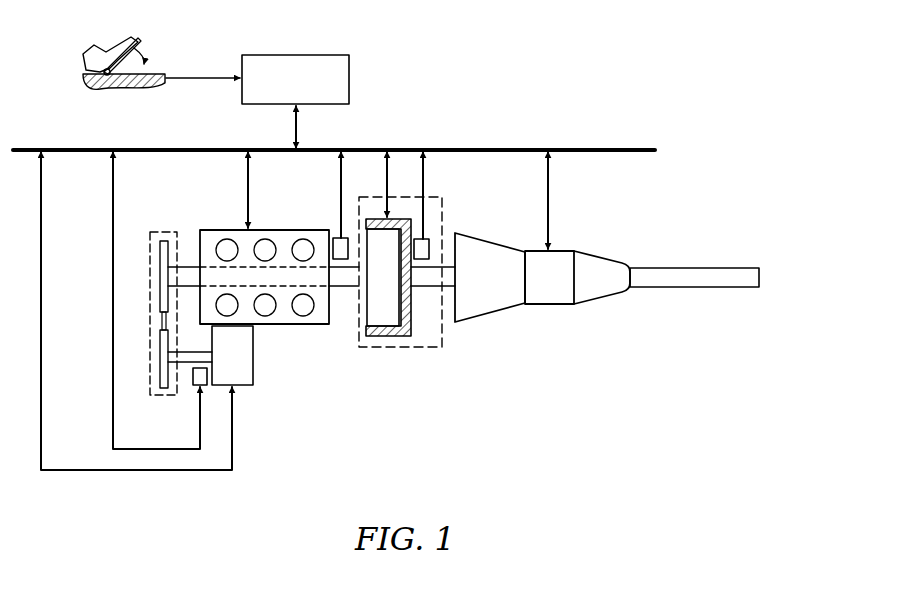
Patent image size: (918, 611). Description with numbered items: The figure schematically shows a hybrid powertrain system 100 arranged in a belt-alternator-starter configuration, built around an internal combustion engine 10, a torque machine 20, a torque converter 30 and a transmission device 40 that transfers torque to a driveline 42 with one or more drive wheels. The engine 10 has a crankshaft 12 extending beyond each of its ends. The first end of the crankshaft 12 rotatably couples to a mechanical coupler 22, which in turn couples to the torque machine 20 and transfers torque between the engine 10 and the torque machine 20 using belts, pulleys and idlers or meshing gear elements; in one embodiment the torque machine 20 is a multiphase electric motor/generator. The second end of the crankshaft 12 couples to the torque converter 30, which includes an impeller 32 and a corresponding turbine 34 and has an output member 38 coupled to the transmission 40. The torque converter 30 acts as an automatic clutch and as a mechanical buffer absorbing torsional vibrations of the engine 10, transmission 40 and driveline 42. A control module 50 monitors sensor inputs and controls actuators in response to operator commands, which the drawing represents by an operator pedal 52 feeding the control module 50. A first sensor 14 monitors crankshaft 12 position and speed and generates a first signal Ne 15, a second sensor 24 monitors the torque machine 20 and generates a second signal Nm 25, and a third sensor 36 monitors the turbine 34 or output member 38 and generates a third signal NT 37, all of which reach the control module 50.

The internal combustion engine 10 is at (283, 325).
The crankshaft 12 is at (347, 289).
The first sensor 14 is at (337, 238).
The first signal Ne 15 is at (345, 183).
The torque machine 20 is at (254, 372).
The mechanical coupler 22 is at (146, 311).
The second sensor 24 is at (192, 380).
The second signal Nm 25 is at (113, 223).
The torque converter 30 is at (385, 353).
The impeller 32 is at (372, 338).
The turbine 34 is at (397, 338).
The third sensor 36 is at (423, 238).
The third signal NT 37 is at (424, 185).
The output member 38 is at (427, 290).
The transmission device 40 is at (473, 323).
The driveline 42 is at (681, 288).
The control module 50 is at (295, 101).
The accelerator pedal 52 is at (110, 53).
The hybrid powertrain system 100 is at (163, 488).